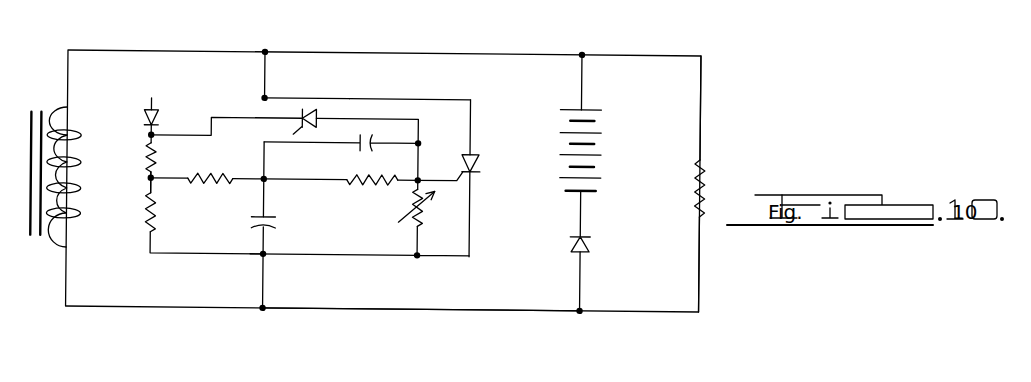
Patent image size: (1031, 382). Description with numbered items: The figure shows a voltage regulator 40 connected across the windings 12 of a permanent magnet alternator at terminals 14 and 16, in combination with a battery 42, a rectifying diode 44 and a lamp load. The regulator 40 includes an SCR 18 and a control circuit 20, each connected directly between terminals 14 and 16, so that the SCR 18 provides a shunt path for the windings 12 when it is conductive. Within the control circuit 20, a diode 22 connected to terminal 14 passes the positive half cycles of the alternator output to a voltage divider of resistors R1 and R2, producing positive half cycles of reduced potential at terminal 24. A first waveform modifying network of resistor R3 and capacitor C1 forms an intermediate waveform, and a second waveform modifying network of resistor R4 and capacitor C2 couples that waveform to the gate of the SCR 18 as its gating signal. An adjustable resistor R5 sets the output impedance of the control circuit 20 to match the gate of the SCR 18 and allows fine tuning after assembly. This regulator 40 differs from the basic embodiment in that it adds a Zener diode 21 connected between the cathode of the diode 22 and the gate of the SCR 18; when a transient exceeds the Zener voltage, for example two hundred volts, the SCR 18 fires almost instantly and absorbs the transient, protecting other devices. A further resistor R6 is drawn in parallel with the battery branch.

The windings 12 is at (86, 149).
The terminal 14 is at (268, 94).
The terminal 16 is at (289, 272).
The SCR 18 is at (481, 161).
The control circuit 20 is at (352, 187).
The zener diode 21 is at (319, 105).
The diode 22 is at (158, 123).
The terminal 24 is at (150, 179).
The voltage regulator 40 is at (404, 85).
The battery 42 is at (596, 147).
The rectifying diode 44 is at (591, 241).
The resistor R1 is at (150, 149).
The resistor R2 is at (150, 221).
The resistor R3 is at (227, 154).
The resistor R4 is at (382, 205).
The adjustable resistor R5 is at (423, 216).
The resistor R6 is at (705, 174).
The capacitor C1 is at (250, 219).
The capacitor C2 is at (352, 150).